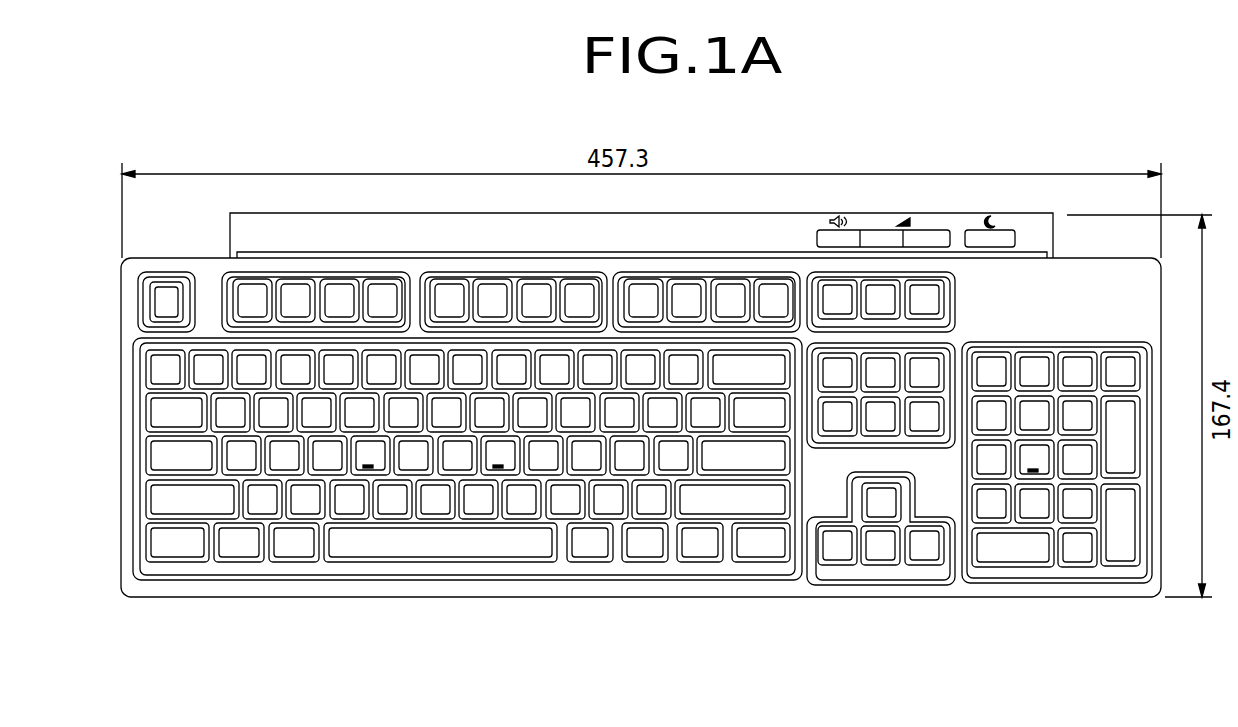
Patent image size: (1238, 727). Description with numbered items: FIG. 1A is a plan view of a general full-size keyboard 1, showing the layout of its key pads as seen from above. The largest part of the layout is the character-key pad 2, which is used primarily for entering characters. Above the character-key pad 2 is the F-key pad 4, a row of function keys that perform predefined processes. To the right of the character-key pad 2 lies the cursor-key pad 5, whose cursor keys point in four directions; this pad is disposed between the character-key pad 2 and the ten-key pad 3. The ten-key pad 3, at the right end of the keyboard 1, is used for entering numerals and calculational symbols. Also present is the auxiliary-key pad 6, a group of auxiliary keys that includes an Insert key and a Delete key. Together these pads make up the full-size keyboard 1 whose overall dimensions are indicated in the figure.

The full-size keyboard 1 is at (265, 614).
The character-key pad 2 is at (390, 581).
The ten-key pad 3 is at (1052, 585).
The F-key pad 4 is at (376, 272).
The cursor-key pad 5 is at (878, 586).
The auxiliary-key pad 6 is at (958, 309).